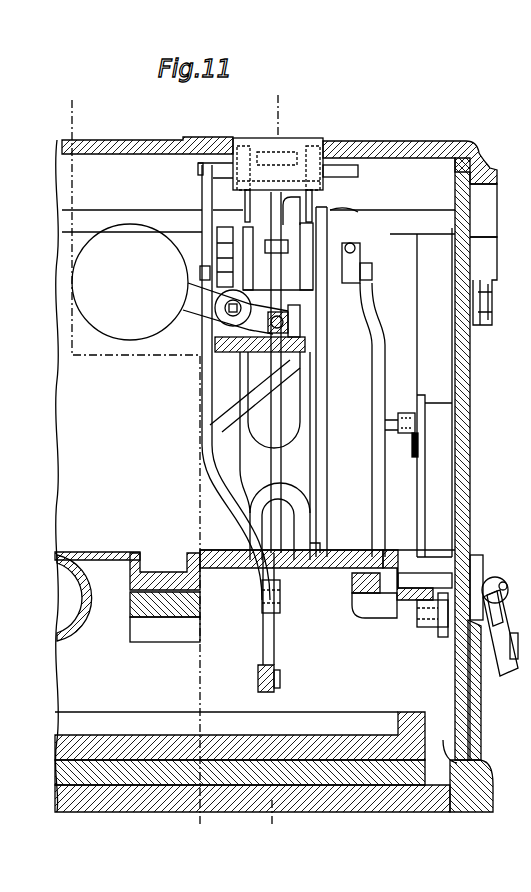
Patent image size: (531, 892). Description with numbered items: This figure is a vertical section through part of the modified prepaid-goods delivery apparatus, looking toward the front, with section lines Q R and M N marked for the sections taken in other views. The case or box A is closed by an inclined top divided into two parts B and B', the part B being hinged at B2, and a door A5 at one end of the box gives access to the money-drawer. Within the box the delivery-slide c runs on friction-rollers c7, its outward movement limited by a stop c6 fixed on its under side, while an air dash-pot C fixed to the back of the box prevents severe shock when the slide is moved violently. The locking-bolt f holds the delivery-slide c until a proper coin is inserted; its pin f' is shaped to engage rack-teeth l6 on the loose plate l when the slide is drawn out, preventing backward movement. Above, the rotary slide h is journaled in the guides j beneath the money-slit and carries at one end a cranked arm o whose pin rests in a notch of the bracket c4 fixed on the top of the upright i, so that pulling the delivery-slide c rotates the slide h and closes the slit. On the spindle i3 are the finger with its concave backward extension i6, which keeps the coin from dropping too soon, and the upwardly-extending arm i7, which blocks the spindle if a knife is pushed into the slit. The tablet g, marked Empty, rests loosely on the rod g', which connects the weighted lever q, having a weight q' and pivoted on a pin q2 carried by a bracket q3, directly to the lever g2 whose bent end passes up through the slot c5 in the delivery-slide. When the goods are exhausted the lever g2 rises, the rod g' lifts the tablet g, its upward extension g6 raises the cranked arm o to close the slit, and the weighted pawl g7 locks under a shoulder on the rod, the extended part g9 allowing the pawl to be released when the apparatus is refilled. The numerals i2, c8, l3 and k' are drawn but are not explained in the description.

The case or box A is at (470, 452).
The door A5 is at (482, 708).
The part of the lid B' is at (495, 210).
The part of the lid B is at (493, 281).
The hinge B2 is at (492, 302).
The section line Q is at (131, 440).
The section line R is at (206, 821).
The section line M is at (276, 106).
The section line N is at (280, 821).
The tablet g is at (260, 153).
The rotary slide h is at (320, 210).
The cranked arm o is at (202, 196).
The upward extension g6 is at (202, 412).
The bracket c4 is at (217, 243).
The frame i2 is at (250, 245).
The guides j is at (312, 212).
The upwardly-extending arm i7 is at (356, 218).
The spindle i3 is at (286, 372).
The backward extension i6 is at (288, 250).
The slot c5 is at (278, 285).
The weight q' is at (130, 282).
The lever q is at (235, 308).
The pin q2 is at (233, 314).
The roller block c8 is at (300, 340).
The weighted pawl g7 is at (300, 336).
The bracket q3 is at (215, 348).
The rod g' is at (288, 456).
The extended part g9 is at (226, 420).
The upright i is at (327, 330).
The locking-bolt f is at (371, 400).
The pin f' is at (391, 440).
The rack-teeth l6 is at (405, 413).
The plate l is at (418, 450).
The stop l3 is at (433, 400).
The delivery-slide c is at (320, 568).
The stop c6 is at (165, 617).
The air dash-pot C is at (74, 598).
The bracket k' is at (402, 614).
The friction-rollers c7 is at (430, 628).
The lever g2 is at (260, 660).